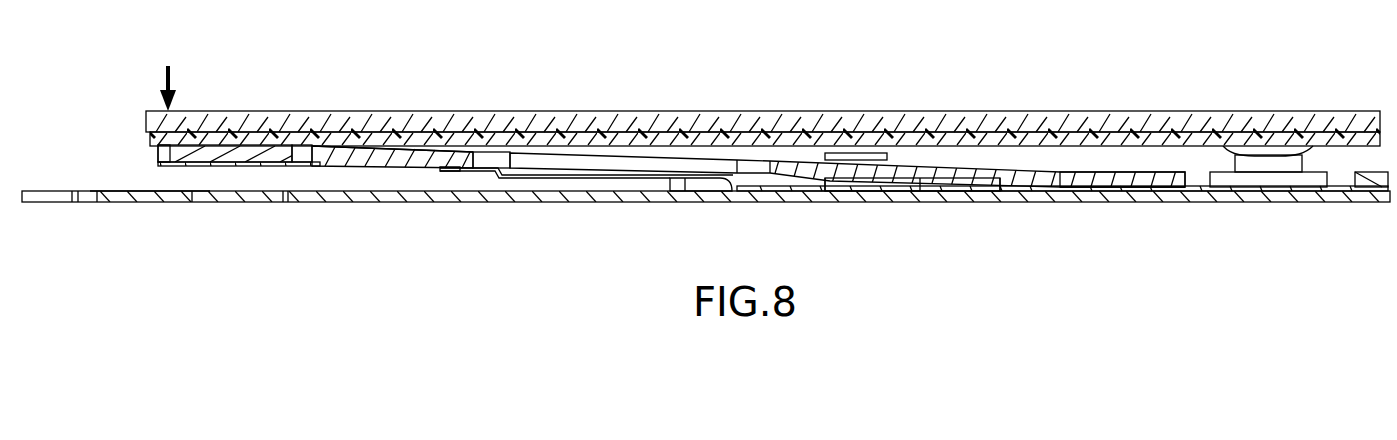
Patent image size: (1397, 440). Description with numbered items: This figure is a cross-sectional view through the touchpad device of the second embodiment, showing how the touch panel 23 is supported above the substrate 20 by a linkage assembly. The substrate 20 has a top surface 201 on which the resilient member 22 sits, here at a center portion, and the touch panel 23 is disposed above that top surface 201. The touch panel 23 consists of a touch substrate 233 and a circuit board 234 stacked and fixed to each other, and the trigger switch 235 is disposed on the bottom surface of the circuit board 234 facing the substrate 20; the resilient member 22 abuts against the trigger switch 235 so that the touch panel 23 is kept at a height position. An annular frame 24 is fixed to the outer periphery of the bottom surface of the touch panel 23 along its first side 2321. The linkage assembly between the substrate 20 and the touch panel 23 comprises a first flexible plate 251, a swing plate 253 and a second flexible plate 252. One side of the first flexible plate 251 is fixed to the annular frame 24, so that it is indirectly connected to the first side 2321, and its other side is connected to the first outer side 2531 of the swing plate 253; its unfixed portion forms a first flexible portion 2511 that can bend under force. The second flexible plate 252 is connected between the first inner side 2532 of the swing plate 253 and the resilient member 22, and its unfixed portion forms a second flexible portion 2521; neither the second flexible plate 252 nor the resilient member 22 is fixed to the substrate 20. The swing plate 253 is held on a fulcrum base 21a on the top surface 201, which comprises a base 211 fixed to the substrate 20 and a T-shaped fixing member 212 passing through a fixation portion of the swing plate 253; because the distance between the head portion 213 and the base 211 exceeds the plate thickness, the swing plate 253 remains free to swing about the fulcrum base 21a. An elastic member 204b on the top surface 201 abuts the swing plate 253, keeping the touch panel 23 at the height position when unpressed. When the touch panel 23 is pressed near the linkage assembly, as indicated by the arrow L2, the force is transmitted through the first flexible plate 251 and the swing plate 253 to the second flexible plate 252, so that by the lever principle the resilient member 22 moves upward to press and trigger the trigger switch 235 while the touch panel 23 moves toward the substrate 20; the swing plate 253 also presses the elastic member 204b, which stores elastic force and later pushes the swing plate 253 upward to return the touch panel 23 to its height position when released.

The substrate 20 is at (105, 204).
The top surface 201 is at (125, 190).
The resilient member 22 is at (1277, 188).
The touch panel 23 is at (763, 84).
The touch substrate 233 is at (605, 116).
The circuit board 234 is at (585, 60).
The trigger switch 235 is at (1270, 150).
The first side 2321 is at (173, 147).
The arrow L2 is at (176, 78).
The annular frame 24 is at (172, 167).
The first flexible portion 2511 is at (295, 166).
The first flexible plate 251 is at (328, 170).
The first outer side 2531 is at (395, 150).
The swing plate 253 is at (718, 155).
The first inner side 2532 is at (1113, 182).
The fulcrum base 21a is at (893, 105).
The head portion 213 is at (833, 156).
The T-shaped fixing member 212 is at (882, 180).
The base 211 is at (912, 126).
The elastic member 204b is at (620, 178).
The second flexible plate 252 is at (1080, 188).
The second flexible portion 2521 is at (1193, 191).